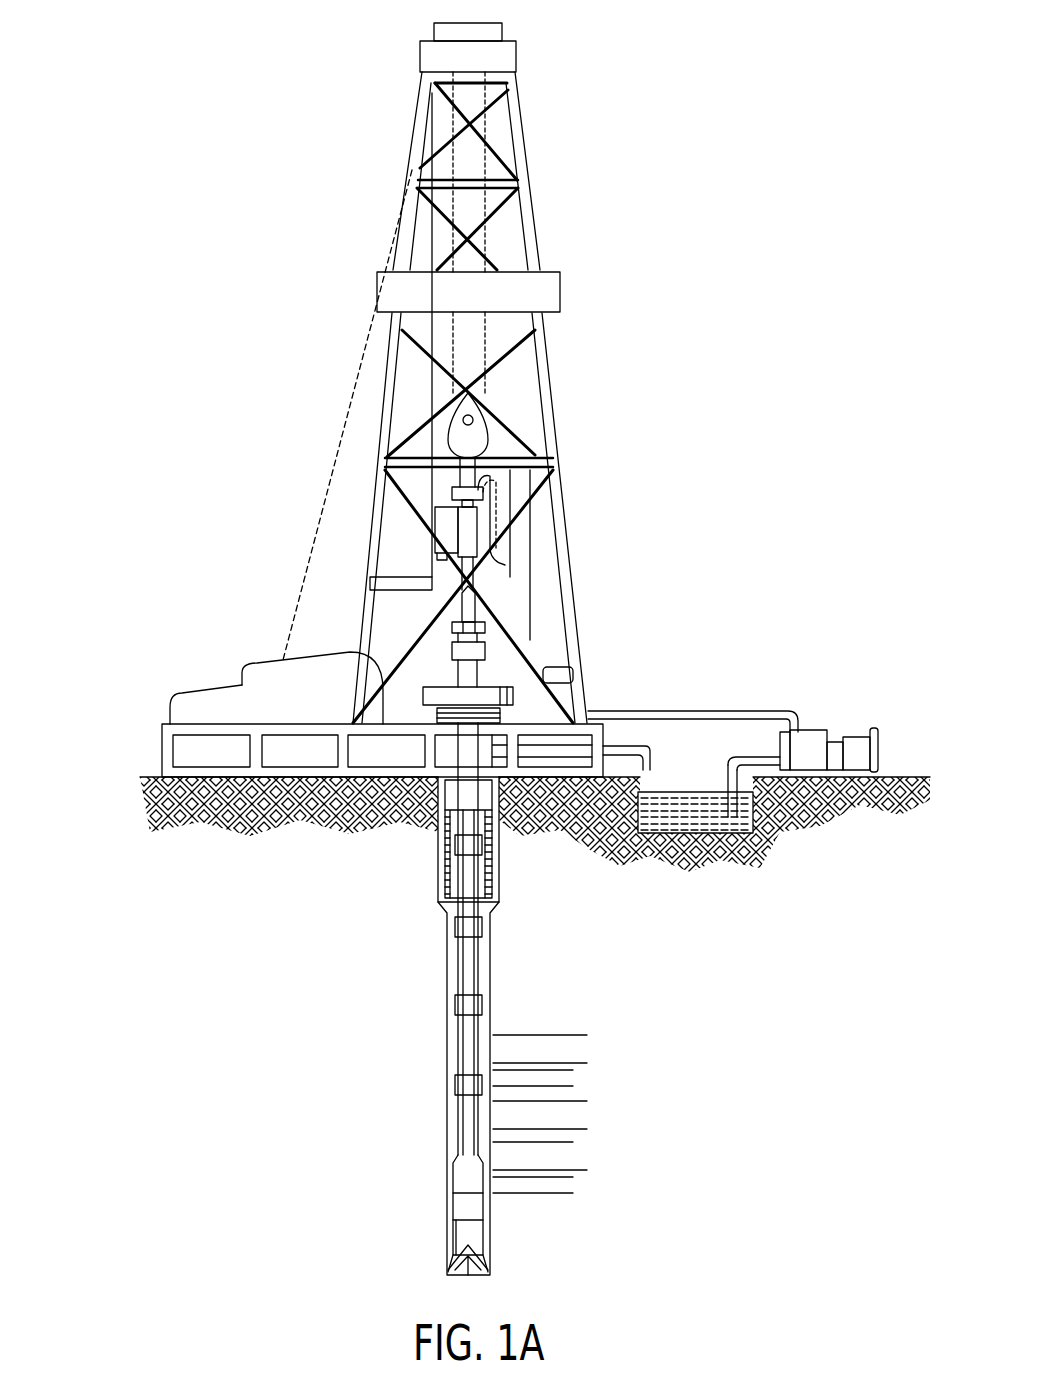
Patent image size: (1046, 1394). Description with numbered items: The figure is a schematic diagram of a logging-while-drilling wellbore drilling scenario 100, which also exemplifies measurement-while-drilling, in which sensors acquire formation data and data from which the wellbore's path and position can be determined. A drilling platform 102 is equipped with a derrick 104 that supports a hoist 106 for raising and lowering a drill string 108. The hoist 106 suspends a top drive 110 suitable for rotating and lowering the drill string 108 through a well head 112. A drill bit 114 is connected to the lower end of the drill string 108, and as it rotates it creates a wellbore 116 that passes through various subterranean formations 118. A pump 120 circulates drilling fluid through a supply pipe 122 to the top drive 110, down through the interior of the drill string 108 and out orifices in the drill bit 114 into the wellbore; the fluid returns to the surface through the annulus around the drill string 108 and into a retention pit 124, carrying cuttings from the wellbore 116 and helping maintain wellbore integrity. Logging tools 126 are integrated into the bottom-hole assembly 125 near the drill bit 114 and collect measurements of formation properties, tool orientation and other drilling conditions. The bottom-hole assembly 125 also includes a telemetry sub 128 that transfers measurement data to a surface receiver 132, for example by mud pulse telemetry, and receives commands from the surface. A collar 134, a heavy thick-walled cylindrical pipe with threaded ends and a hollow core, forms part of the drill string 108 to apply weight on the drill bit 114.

The wellbore drilling scenario 100 is at (338, 86).
The drilling platform 102 is at (162, 745).
The derrick 104 is at (531, 221).
The hoist 106 is at (490, 427).
The drill string 108 is at (478, 965).
The top drive 110 is at (475, 513).
The well head 112 is at (488, 687).
The drill bit 114 is at (488, 1262).
The wellbore 116 is at (490, 997).
The subterranean formations 118 is at (590, 1030).
The pump 120 is at (810, 740).
The supply pipe 122 is at (690, 711).
The retention pit 124 is at (690, 835).
The bottom-hole assembly 125 is at (370, 1147).
The logging tools 126 is at (460, 1207).
The telemetry sub 128 is at (458, 1175).
The surface receiver 132 is at (468, 592).
The collar 134 is at (468, 1213).